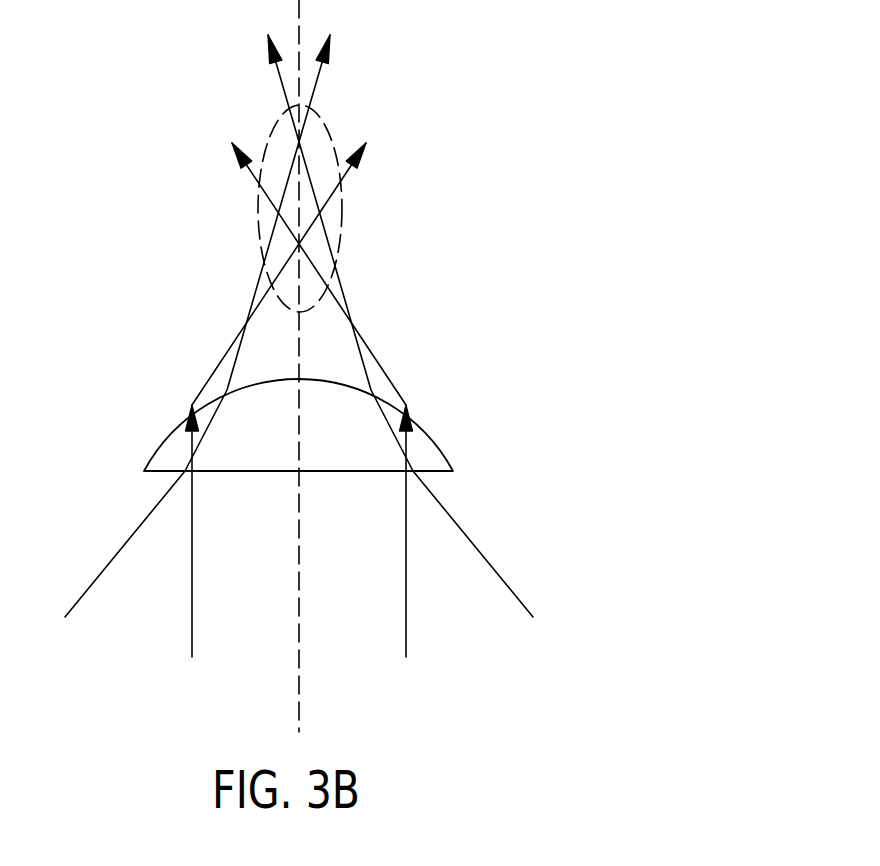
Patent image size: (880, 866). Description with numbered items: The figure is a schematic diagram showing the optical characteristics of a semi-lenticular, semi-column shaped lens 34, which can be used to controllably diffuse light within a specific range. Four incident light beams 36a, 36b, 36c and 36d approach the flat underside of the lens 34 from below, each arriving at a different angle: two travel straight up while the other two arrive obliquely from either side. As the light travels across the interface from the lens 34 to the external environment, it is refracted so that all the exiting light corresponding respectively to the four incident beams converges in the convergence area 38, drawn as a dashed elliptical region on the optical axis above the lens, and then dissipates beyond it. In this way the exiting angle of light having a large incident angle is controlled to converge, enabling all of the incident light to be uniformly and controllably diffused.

The lens 34 is at (445, 445).
The incident light 36a is at (470, 540).
The incident light 36b is at (406, 575).
The incident light 36c is at (192, 582).
The incident light 36d is at (97, 578).
The convergence area 38 is at (343, 203).